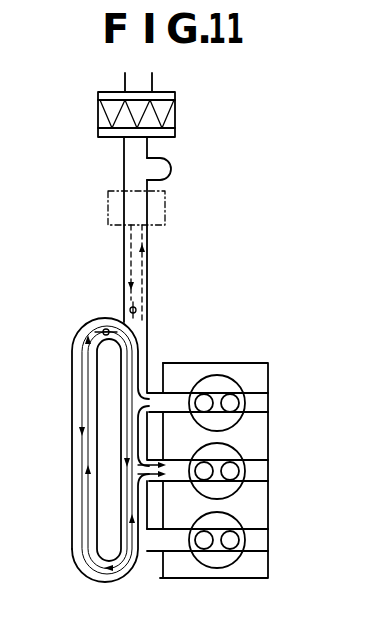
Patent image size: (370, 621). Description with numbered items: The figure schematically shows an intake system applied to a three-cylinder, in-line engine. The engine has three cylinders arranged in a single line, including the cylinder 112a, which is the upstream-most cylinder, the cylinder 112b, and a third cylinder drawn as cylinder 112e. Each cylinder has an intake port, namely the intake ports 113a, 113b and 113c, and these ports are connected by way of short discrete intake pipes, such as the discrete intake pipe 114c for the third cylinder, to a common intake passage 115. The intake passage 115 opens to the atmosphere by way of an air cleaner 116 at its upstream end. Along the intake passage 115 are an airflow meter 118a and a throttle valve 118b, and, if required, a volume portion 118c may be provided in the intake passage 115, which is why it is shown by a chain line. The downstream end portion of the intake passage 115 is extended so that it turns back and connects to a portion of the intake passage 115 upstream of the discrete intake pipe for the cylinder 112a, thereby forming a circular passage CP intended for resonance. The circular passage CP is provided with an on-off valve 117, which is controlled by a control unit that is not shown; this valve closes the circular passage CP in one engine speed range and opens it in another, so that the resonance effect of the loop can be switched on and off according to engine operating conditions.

The air cleaner 116 is at (175, 113).
The intake passage 115 is at (150, 238).
The airflow meter 118a is at (160, 160).
The volume portion 118c is at (166, 204).
The throttle valve 118b is at (138, 304).
The on-off valve 117 is at (99, 321).
The circular passage CP is at (72, 404).
The cylinder 112a is at (216, 376).
The cylinder 112b is at (242, 449).
The third cooling unit 112e is at (235, 562).
The intake port 113a is at (206, 398).
The intake port 113b is at (205, 465).
The intake port 113c is at (202, 546).
The discrete intake pipe 114c is at (155, 540).